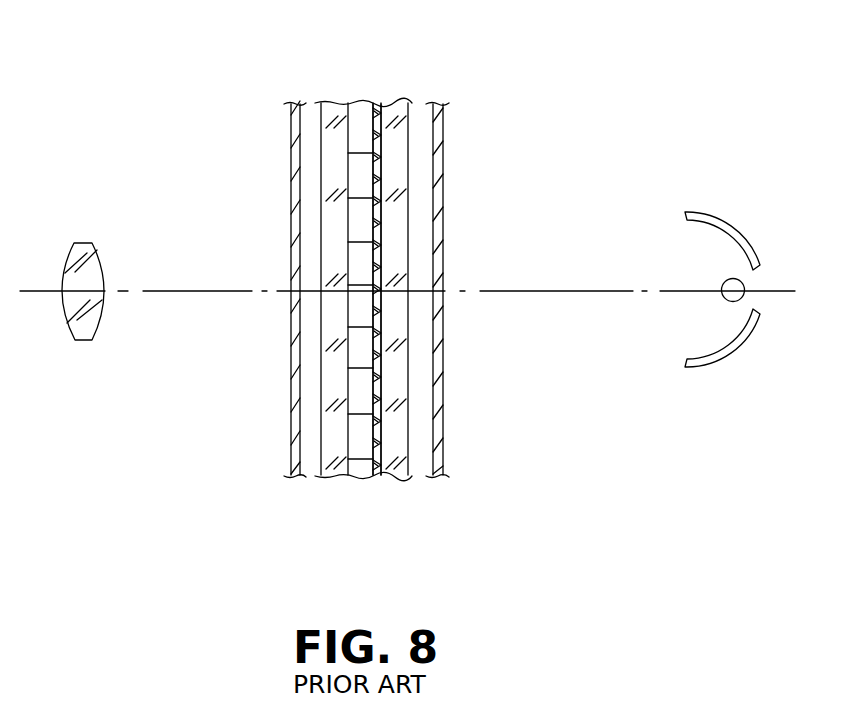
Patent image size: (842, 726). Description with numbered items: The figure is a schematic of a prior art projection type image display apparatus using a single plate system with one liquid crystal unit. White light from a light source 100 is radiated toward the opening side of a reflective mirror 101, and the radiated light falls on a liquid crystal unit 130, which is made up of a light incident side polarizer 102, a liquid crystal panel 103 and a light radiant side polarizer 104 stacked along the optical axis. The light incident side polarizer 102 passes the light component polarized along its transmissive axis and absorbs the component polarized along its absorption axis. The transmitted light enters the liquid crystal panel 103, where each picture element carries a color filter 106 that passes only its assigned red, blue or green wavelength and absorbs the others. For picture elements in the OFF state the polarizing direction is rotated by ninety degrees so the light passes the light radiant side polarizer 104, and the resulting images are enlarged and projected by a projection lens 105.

The light source 100 is at (726, 283).
The reflective mirror 101 is at (737, 352).
The light incident side polarizer 102 is at (462, 318).
The liquid crystal panel 103 is at (378, 288).
The light radiant side polarizer 104 is at (287, 466).
The projection lens 105 is at (87, 342).
The color filter 106 is at (378, 122).
The liquid crystal unit 130 is at (371, 313).